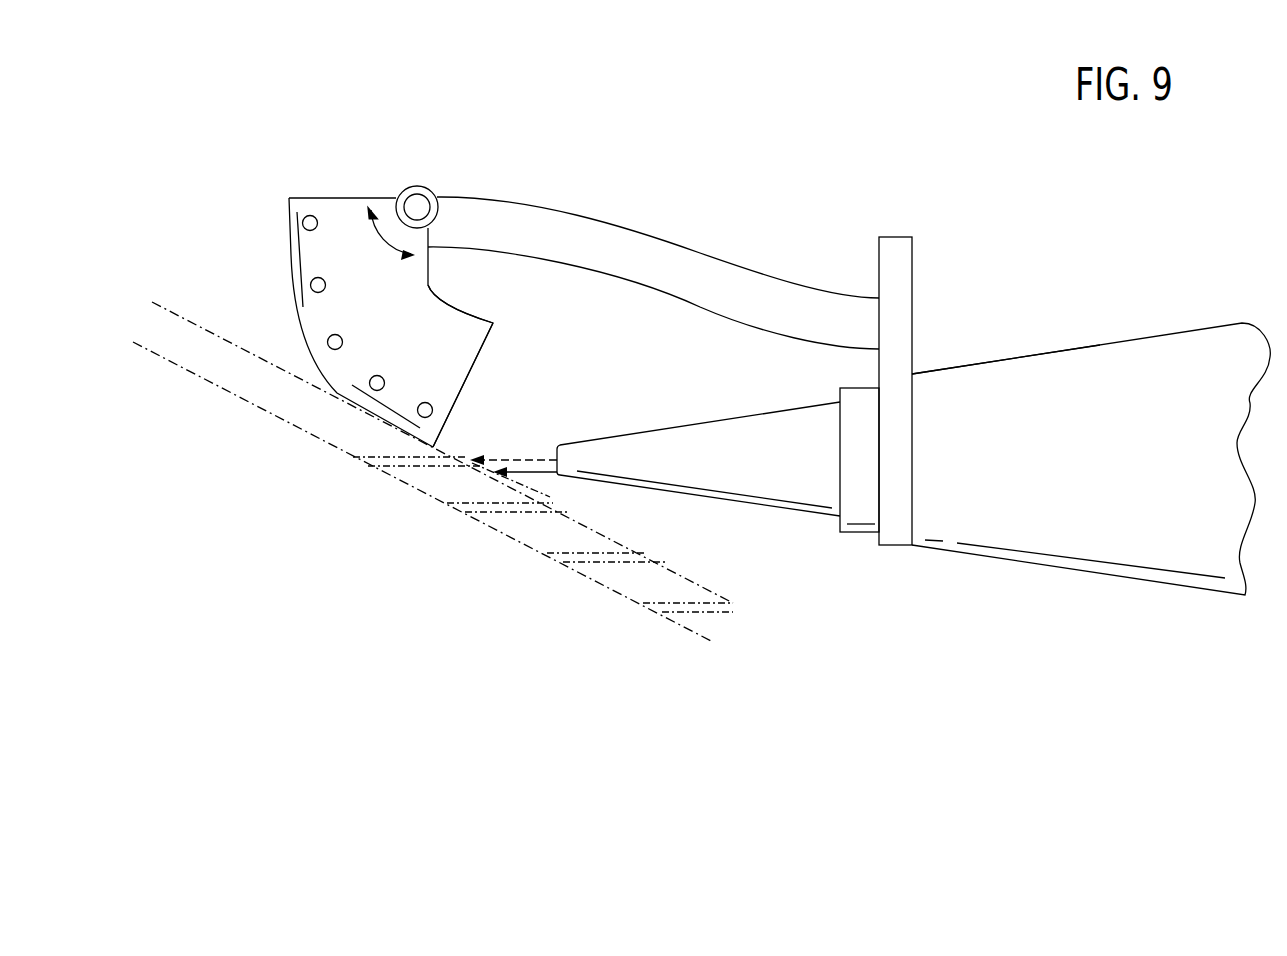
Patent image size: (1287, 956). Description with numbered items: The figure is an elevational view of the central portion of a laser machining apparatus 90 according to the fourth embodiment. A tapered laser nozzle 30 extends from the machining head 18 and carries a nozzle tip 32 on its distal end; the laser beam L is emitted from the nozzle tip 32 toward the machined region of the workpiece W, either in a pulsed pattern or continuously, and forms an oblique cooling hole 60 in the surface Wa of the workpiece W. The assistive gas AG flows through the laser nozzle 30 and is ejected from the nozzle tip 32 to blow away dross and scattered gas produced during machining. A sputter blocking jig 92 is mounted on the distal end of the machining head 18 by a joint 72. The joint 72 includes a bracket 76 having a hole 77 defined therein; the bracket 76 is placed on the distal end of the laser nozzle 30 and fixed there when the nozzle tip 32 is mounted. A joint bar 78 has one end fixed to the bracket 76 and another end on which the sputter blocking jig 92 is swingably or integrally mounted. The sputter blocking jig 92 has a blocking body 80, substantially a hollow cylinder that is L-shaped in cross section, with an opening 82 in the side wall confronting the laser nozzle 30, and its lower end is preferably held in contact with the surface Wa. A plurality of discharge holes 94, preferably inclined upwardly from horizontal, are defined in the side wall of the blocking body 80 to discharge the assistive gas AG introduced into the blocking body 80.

The laser machining apparatus 90 is at (1144, 172).
The sputter blocking jig 92 is at (282, 238).
The discharge holes 94 is at (335, 334).
The opening 82 is at (488, 315).
The blocking body 80 is at (477, 375).
The joint bar 78 is at (617, 233).
The joint 72 is at (731, 273).
The bracket 76 is at (900, 264).
The nozzle tip 32 is at (685, 432).
The machining head 18 is at (1136, 332).
The laser nozzle 30 is at (983, 378).
The hole 77 is at (913, 468).
The cooling hole 60 is at (407, 462).
The workpiece W is at (189, 313).
The surface Wa is at (212, 333).
The laser beam L is at (533, 460).
The assistive gas AG is at (550, 472).